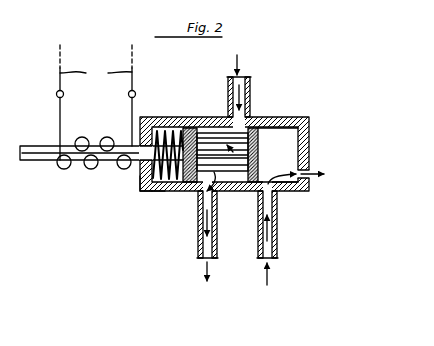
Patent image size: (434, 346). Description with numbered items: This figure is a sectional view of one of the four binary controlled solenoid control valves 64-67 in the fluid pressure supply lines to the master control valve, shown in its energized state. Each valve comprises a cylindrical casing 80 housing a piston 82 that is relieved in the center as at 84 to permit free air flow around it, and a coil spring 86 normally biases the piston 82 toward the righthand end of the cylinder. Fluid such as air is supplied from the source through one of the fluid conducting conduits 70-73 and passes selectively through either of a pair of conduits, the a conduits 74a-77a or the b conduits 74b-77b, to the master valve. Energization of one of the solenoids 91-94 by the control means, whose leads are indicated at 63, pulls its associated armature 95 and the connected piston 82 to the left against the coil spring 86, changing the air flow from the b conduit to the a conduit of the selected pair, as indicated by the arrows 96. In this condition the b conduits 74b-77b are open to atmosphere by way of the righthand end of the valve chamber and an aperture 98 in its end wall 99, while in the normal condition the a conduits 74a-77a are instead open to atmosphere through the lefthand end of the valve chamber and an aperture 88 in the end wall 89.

The sensing coil leads 63 is at (96, 102).
The solenoids 91-94 is at (98, 121).
The armature 95 is at (39, 152).
The solenoid control valves 64-67 is at (312, 117).
The coil spring 86 is at (158, 128).
The piston 82 is at (194, 127).
The relieved center 84 is at (248, 134).
The cylindrical casing 80 is at (307, 133).
The end wall 99 is at (309, 156).
The fluid conducting conduits 70-73 is at (248, 81).
The a conduits 74a-77a is at (198, 235).
The b conduits 74b-77b is at (277, 229).
The arrows 96 is at (222, 176).
The aperture 98 is at (308, 183).
The aperture 88 is at (140, 177).
The end wall 89 is at (157, 191).